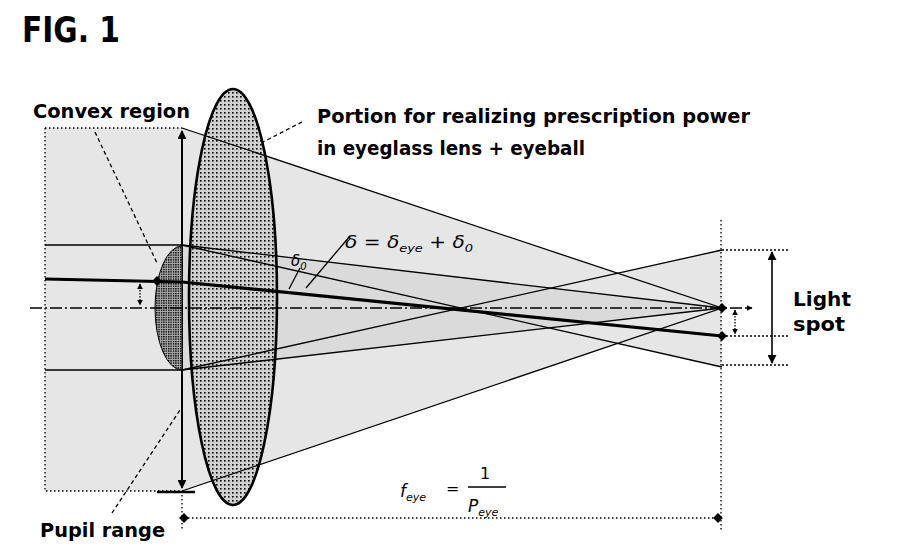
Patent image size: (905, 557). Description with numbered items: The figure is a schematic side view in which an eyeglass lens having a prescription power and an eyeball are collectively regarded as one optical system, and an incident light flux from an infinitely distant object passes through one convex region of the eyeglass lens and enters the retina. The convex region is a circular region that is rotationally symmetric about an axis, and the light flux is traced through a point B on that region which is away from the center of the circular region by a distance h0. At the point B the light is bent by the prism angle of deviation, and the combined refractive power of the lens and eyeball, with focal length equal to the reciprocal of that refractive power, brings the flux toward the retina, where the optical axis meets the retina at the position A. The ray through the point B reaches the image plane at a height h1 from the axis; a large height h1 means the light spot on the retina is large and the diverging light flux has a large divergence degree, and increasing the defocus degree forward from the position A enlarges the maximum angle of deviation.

The position on the retina A is at (728, 315).
The point on the convex region B is at (159, 308).
The distance from the center of the circular region h0 is at (125, 294).
The height on the image plane h1 is at (749, 325).